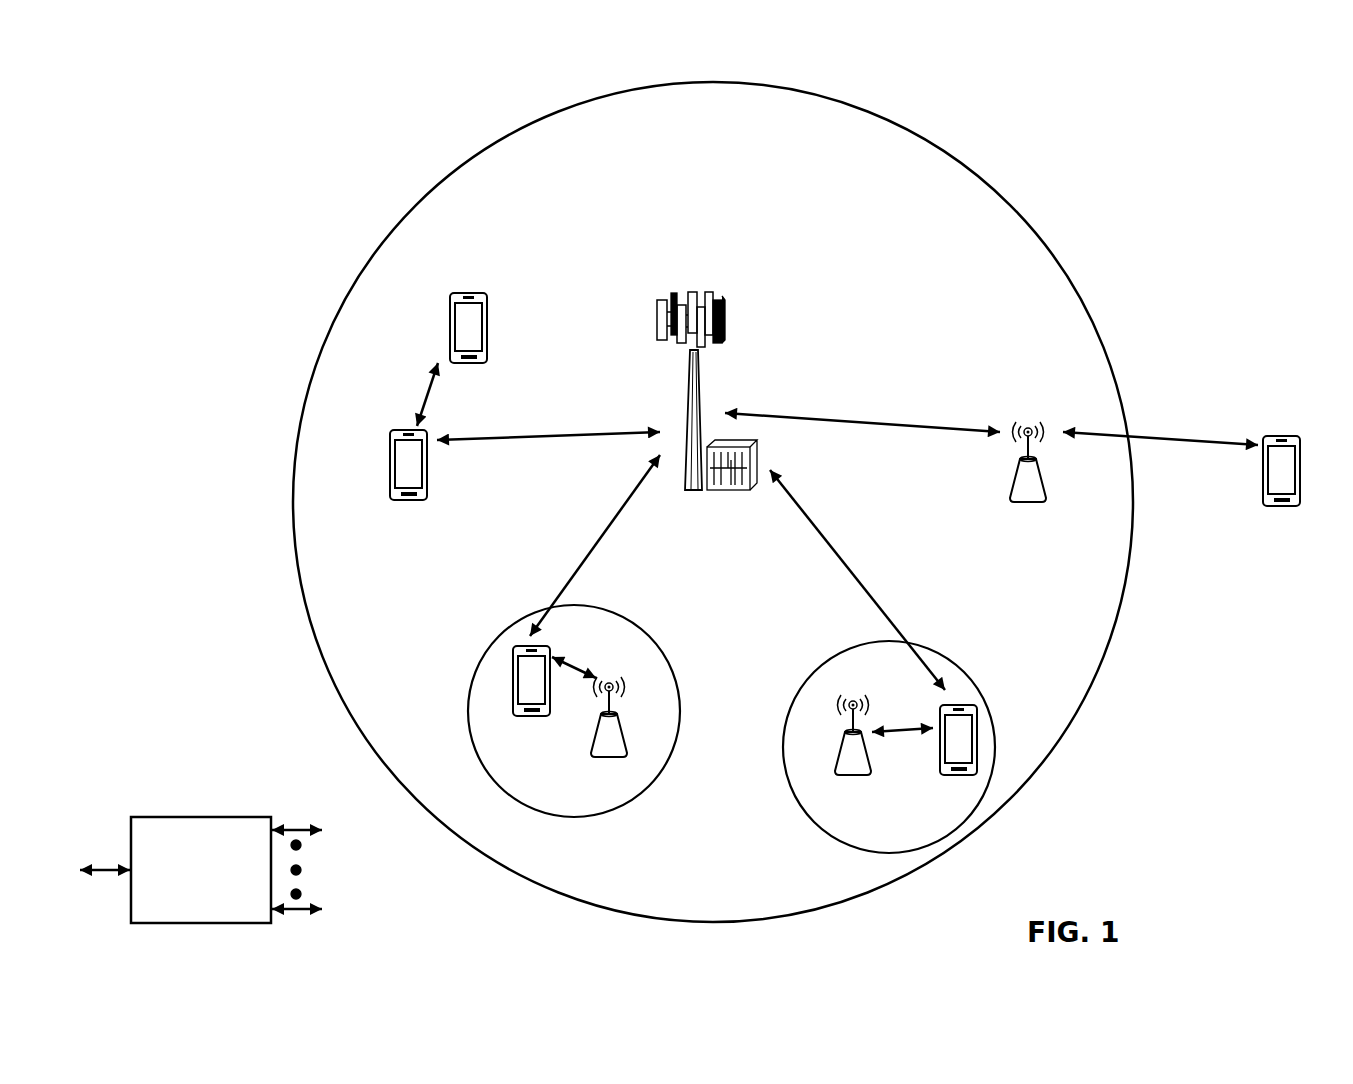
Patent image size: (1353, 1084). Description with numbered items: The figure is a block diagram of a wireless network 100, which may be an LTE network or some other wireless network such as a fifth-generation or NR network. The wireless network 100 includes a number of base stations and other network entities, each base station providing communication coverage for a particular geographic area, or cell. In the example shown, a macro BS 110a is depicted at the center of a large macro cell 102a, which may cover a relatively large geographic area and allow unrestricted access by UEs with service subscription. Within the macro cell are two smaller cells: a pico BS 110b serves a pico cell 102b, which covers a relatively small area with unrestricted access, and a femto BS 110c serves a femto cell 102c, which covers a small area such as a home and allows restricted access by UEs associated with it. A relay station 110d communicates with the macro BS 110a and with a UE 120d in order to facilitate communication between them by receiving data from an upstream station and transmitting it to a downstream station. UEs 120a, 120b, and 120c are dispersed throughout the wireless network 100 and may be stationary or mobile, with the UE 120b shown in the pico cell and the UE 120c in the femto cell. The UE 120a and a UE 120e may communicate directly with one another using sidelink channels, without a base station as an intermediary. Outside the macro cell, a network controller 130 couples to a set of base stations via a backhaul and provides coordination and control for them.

The wireless network 100 is at (188, 80).
The macro cell 102a is at (992, 190).
The pico cell 102b is at (664, 650).
The femto cell 102c is at (826, 660).
The macro BS 110a is at (703, 282).
The pico BS 110b is at (633, 745).
The femto BS 110c is at (838, 758).
The relay station 110d is at (1030, 422).
The UE 120a is at (390, 455).
The UE 120b is at (518, 713).
The UE 120c is at (950, 774).
The UE 120d is at (1291, 435).
The UE 120e is at (452, 315).
The network controller 130 is at (199, 815).